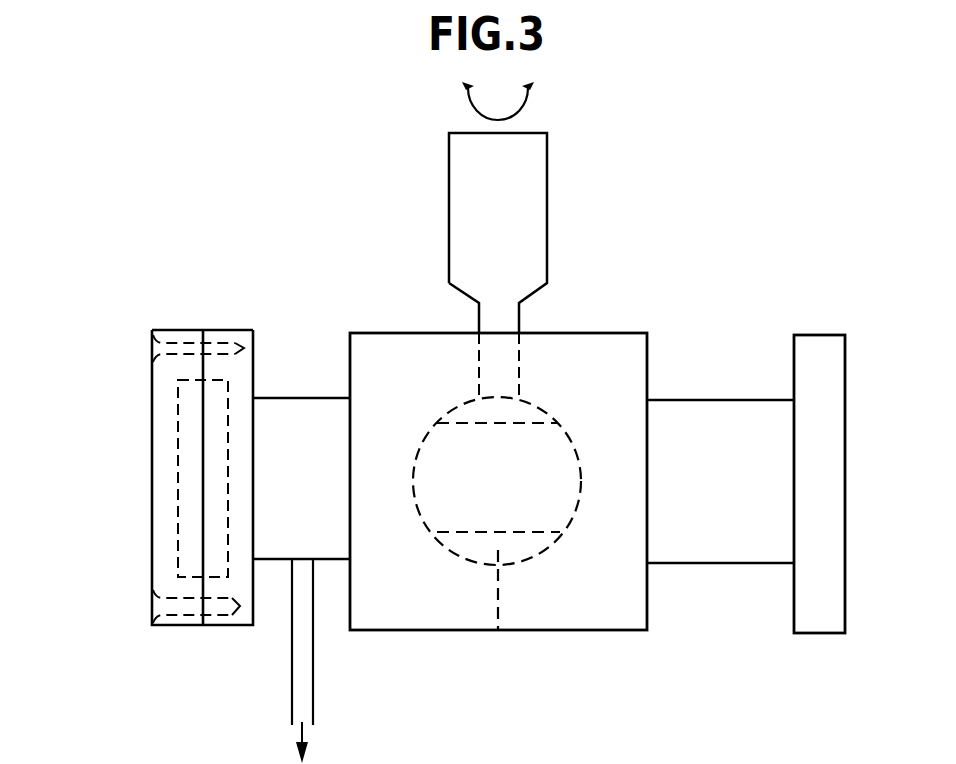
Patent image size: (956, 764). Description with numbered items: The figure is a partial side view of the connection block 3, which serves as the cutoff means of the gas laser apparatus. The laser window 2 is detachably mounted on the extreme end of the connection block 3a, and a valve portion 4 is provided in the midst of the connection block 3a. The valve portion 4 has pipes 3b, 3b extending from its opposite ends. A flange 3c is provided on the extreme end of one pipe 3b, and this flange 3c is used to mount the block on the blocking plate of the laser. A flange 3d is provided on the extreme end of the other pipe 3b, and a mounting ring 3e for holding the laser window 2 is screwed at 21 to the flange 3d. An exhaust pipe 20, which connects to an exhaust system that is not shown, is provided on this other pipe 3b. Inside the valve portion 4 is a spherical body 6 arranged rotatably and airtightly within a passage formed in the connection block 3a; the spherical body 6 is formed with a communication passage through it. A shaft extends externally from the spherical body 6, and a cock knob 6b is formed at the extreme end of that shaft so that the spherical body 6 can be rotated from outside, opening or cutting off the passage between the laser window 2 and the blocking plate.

The laser window 2 is at (190, 512).
The connection block 3 is at (578, 211).
The connection block 3a is at (583, 632).
The pipes 3b is at (298, 417).
The flange 3c is at (810, 637).
The flange 3d is at (228, 627).
The mounting ring 3e is at (185, 335).
The valve portion 4 is at (429, 592).
The spherical body 6 is at (499, 630).
The cock knob 6b is at (528, 167).
The exhaust pipe 20 is at (292, 692).
The screw connection 21 is at (153, 357).